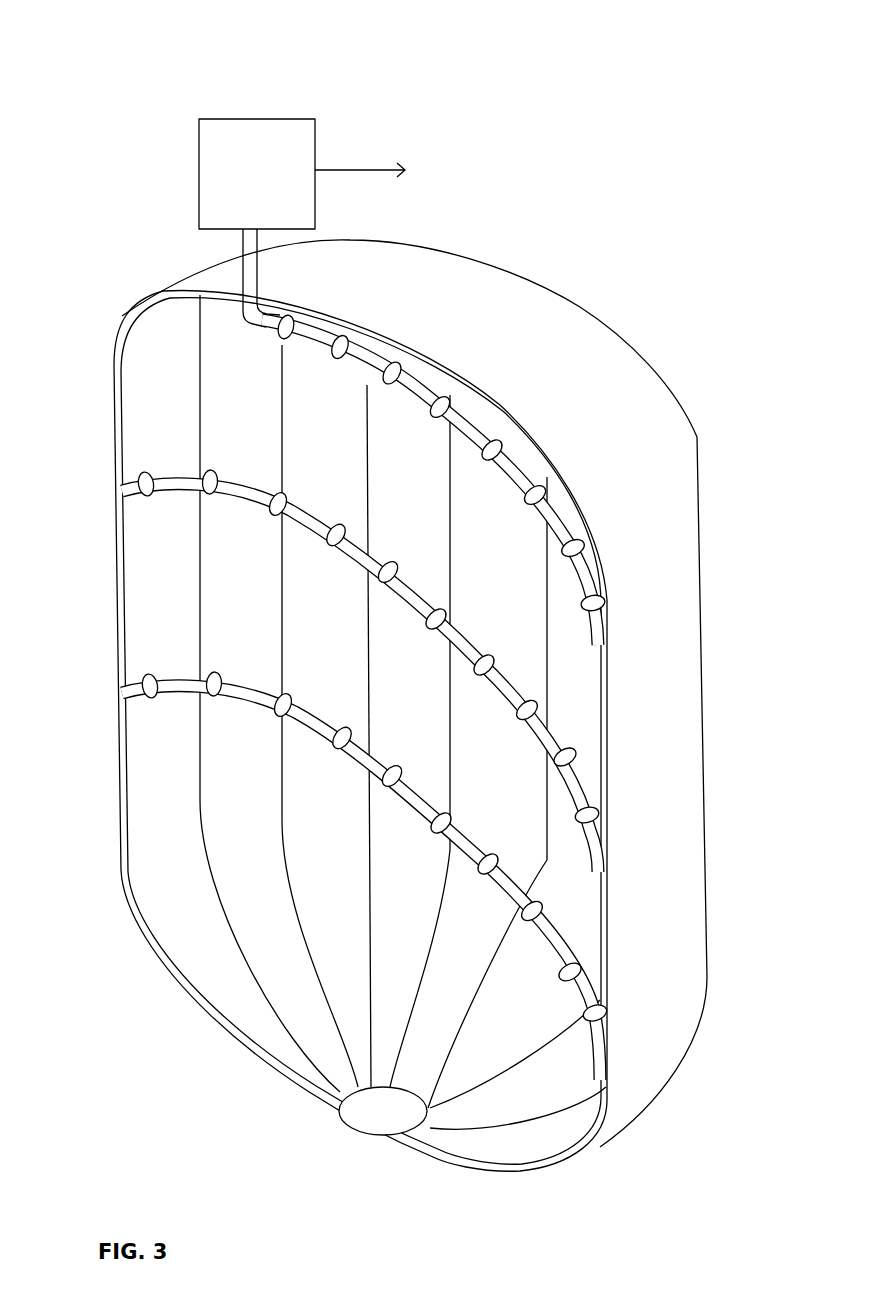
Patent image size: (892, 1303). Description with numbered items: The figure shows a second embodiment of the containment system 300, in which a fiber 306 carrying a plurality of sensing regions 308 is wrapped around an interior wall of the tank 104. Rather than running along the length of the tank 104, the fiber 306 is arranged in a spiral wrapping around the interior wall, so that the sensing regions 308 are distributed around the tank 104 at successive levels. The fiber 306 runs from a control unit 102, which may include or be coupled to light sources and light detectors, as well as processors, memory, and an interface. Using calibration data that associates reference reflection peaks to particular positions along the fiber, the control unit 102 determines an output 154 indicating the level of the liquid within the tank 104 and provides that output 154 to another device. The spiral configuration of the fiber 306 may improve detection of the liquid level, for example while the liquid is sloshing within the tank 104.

The containment system 300 is at (104, 28).
The control unit 102 is at (210, 118).
The tank 104 is at (527, 276).
The output 154 is at (380, 153).
The fiber 306 is at (253, 278).
The sensing regions 308 is at (393, 384).